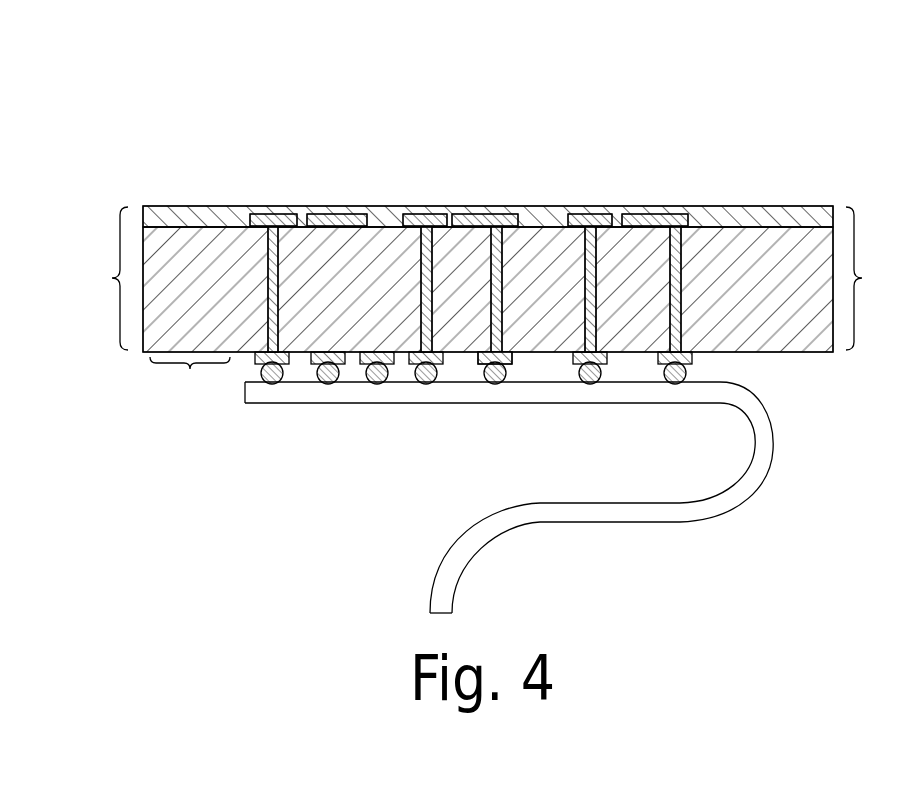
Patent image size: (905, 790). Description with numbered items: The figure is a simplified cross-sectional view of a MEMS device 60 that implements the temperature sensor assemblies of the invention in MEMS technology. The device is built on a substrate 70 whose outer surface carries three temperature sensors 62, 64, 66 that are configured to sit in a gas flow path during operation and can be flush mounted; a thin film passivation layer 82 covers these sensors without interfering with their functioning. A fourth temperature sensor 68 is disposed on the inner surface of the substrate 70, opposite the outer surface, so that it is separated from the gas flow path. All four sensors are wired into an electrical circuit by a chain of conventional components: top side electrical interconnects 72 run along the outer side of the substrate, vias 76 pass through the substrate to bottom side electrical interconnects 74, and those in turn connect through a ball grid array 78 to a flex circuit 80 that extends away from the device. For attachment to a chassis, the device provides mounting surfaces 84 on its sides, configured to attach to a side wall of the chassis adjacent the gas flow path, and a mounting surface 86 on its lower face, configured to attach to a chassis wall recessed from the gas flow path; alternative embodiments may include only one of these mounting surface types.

The MEMS device 60 is at (724, 78).
The temperature sensor 62 is at (312, 218).
The temperature sensor 64 is at (460, 218).
The temperature sensor 66 is at (625, 220).
The temperature sensor 68 is at (352, 352).
The substrate 70 is at (181, 299).
The top side electrical interconnects 72 is at (343, 228).
The bottom side electrical interconnects 74 is at (508, 347).
The vias 76 is at (272, 297).
The ball grid array 78 is at (428, 376).
The flex circuit 80 is at (540, 388).
The thin film passivation layer 82 is at (775, 206).
The mounting surfaces 84 is at (487, 278).
The mounting surface 86 is at (190, 379).